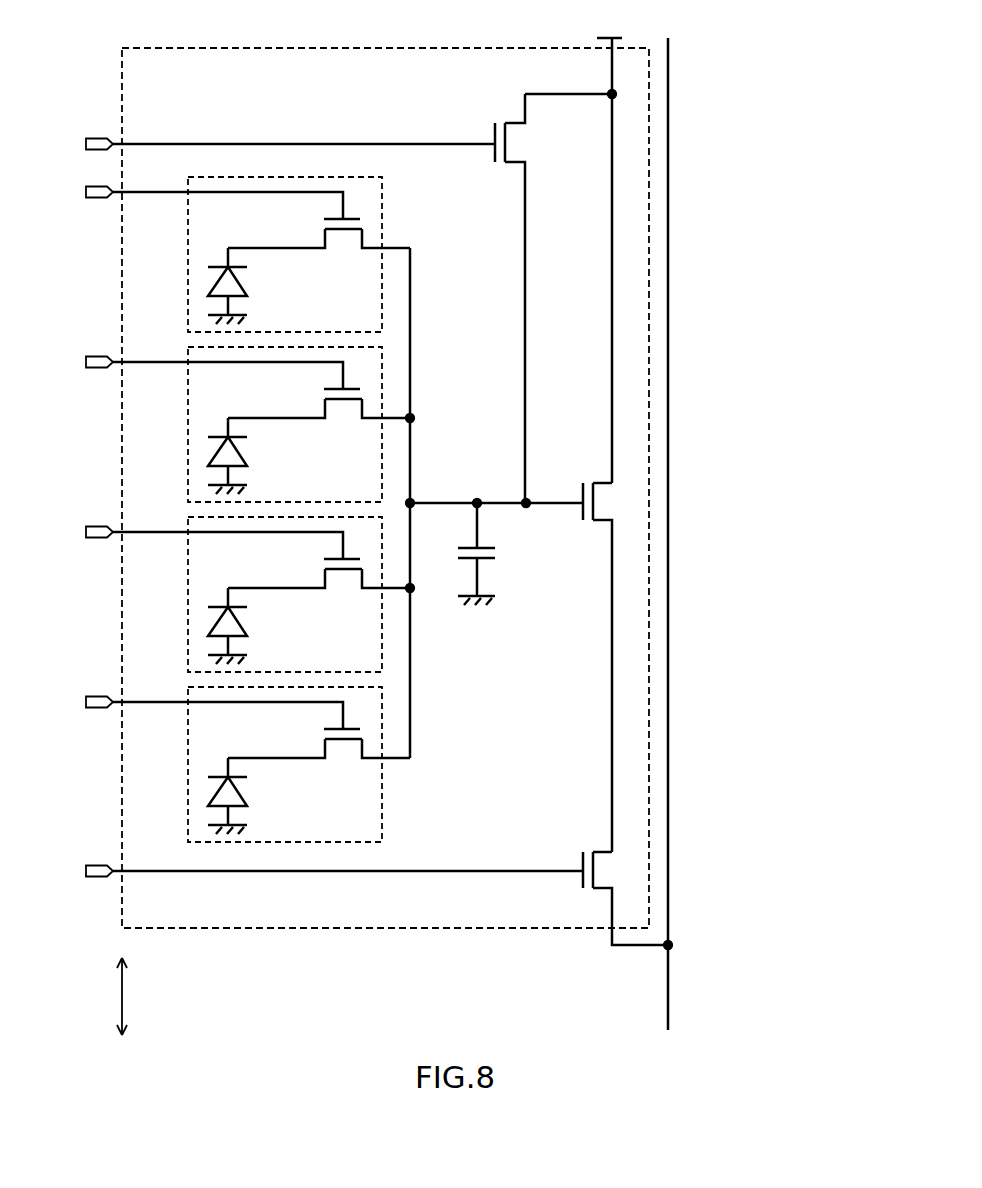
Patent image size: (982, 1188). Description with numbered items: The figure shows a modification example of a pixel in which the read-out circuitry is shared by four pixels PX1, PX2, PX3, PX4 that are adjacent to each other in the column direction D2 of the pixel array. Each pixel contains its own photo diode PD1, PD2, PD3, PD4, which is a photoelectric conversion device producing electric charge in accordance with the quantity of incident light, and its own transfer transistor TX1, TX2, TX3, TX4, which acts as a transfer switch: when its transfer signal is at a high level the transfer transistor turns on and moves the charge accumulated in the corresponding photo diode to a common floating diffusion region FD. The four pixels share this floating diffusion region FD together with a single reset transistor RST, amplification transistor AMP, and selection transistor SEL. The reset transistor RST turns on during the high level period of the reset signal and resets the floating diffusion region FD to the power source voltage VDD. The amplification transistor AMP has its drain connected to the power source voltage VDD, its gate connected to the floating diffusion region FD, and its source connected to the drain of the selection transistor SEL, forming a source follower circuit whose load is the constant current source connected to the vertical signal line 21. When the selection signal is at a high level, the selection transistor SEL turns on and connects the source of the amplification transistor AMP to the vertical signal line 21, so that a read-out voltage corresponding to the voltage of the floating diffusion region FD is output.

The vertical signal line 21 is at (668, 296).
The pixel PX1 is at (361, 829).
The pixel PX2 is at (361, 659).
The pixel PX3 is at (361, 489).
The pixel PX4 is at (361, 319).
The photo diode PD1 is at (244, 796).
The photo diode PD2 is at (244, 626).
The photo diode PD3 is at (244, 456).
The photo diode PD4 is at (244, 286).
The transfer transistor TX1 is at (261, 730).
The transfer transistor TX2 is at (261, 560).
The transfer transistor TX3 is at (261, 390).
The transfer transistor TX4 is at (261, 220).
The reset transistor RST is at (280, 298).
The amplification transistor AMP is at (589, 656).
The selection transistor SEL is at (351, 881).
The floating diffusion region FD is at (496, 552).
The power source voltage VDD is at (574, 248).
The column direction D2 is at (133, 996).